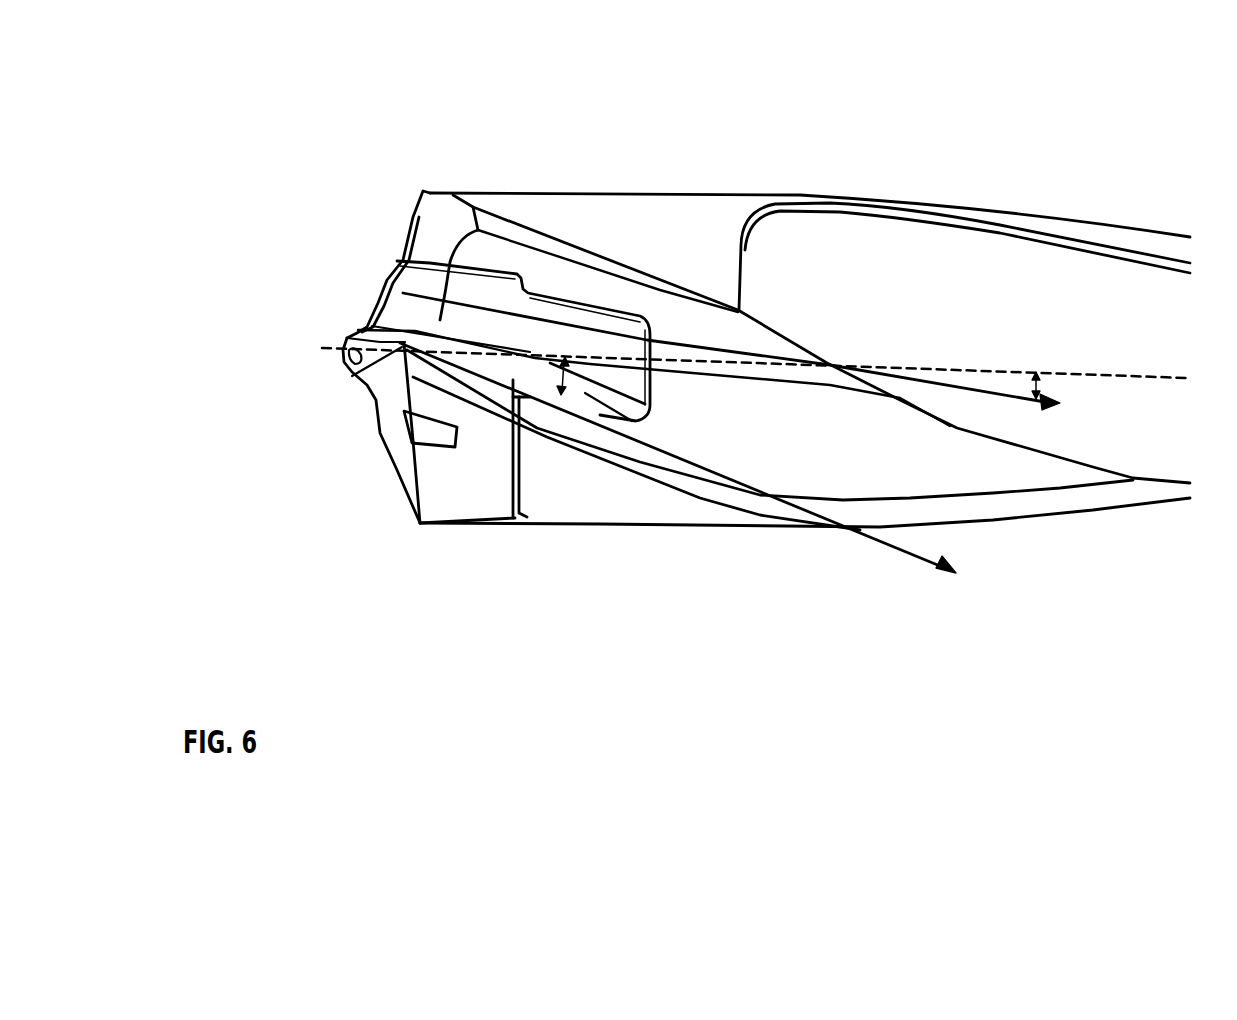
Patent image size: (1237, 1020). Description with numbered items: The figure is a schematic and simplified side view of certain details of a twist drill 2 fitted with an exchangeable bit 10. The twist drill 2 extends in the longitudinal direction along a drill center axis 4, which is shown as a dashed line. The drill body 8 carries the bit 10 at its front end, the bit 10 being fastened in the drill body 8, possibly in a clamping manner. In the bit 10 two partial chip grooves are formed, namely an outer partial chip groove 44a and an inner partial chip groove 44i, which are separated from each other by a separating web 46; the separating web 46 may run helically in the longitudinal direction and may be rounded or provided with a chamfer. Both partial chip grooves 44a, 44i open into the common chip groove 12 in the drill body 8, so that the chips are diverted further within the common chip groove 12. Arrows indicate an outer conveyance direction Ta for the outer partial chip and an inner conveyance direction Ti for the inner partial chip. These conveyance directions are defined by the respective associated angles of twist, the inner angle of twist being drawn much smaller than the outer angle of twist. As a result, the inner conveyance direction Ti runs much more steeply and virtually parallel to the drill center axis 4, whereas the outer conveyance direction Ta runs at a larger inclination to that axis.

The twist drill 2 is at (357, 168).
The drill center axis 4 is at (337, 351).
The drill body 8 is at (978, 210).
The bit 10 is at (467, 473).
The chip groove 12 is at (993, 462).
The inner partial chip groove 44i is at (440, 300).
The outer partial chip groove 44a is at (533, 425).
The separating web 46 is at (633, 430).
The inner conveyance direction Ti is at (905, 372).
The outer conveyance direction Ta is at (748, 400).